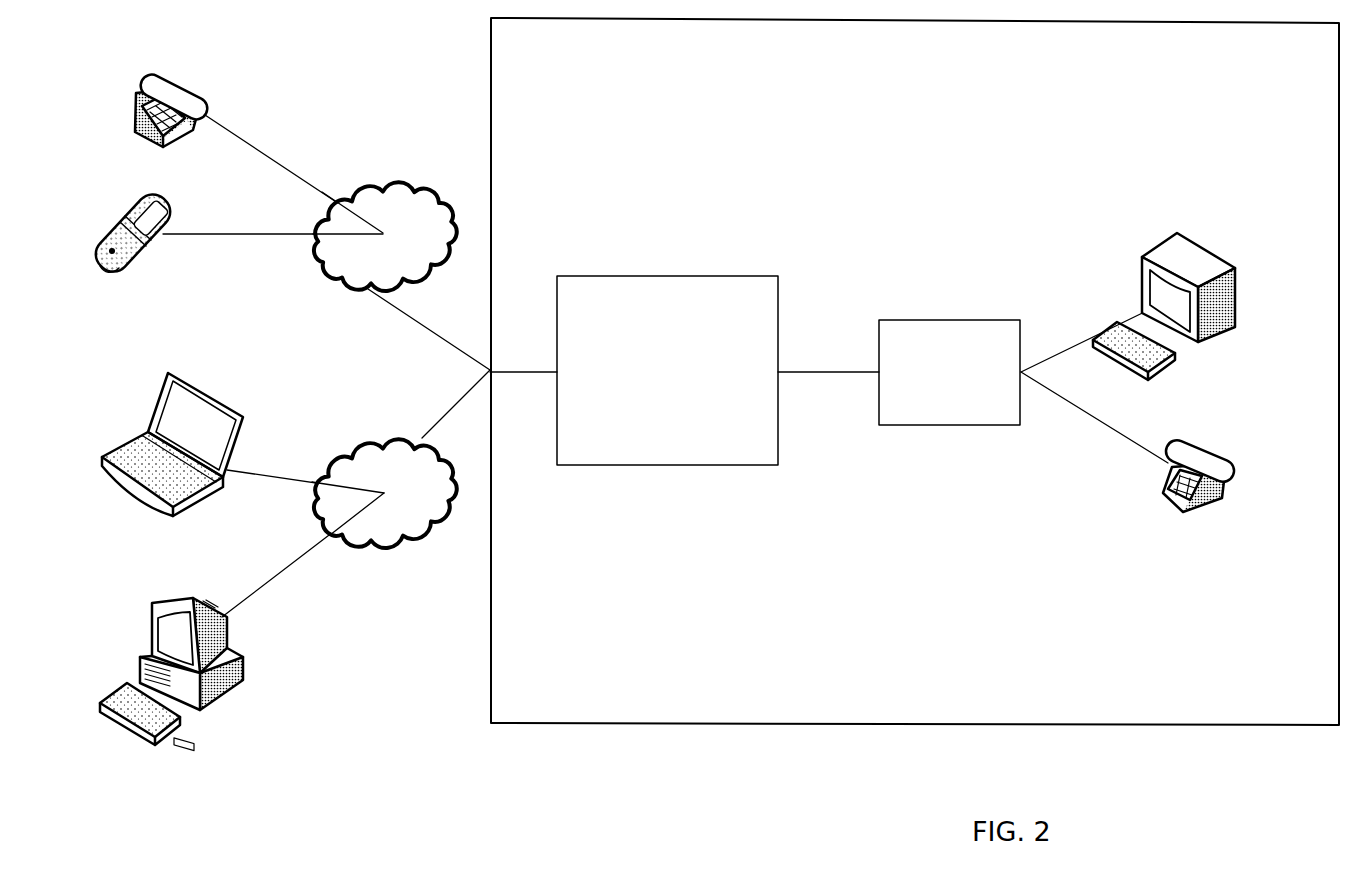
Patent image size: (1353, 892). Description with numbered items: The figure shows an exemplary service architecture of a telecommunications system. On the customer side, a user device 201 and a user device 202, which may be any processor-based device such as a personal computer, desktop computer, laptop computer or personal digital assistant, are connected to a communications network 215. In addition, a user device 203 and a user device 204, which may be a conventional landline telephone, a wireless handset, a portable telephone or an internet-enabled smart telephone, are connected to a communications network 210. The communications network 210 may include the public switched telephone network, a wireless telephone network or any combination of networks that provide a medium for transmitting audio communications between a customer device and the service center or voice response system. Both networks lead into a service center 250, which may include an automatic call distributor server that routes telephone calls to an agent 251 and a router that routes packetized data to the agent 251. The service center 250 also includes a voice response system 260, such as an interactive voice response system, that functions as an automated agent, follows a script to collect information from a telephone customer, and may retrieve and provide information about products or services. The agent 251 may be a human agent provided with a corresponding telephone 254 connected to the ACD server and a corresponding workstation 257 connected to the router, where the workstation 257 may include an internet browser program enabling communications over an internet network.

The user device 201 is at (152, 628).
The user device 202 is at (150, 422).
The user device 203 is at (136, 212).
The user device 204 is at (141, 86).
The communications network 210 is at (385, 236).
The communications network 215 is at (384, 493).
The service center 250 is at (915, 371).
The agent 251 is at (949, 372).
The telephone 254 is at (1225, 496).
The workstation 257 is at (1233, 322).
The voice response system 260 is at (667, 370).